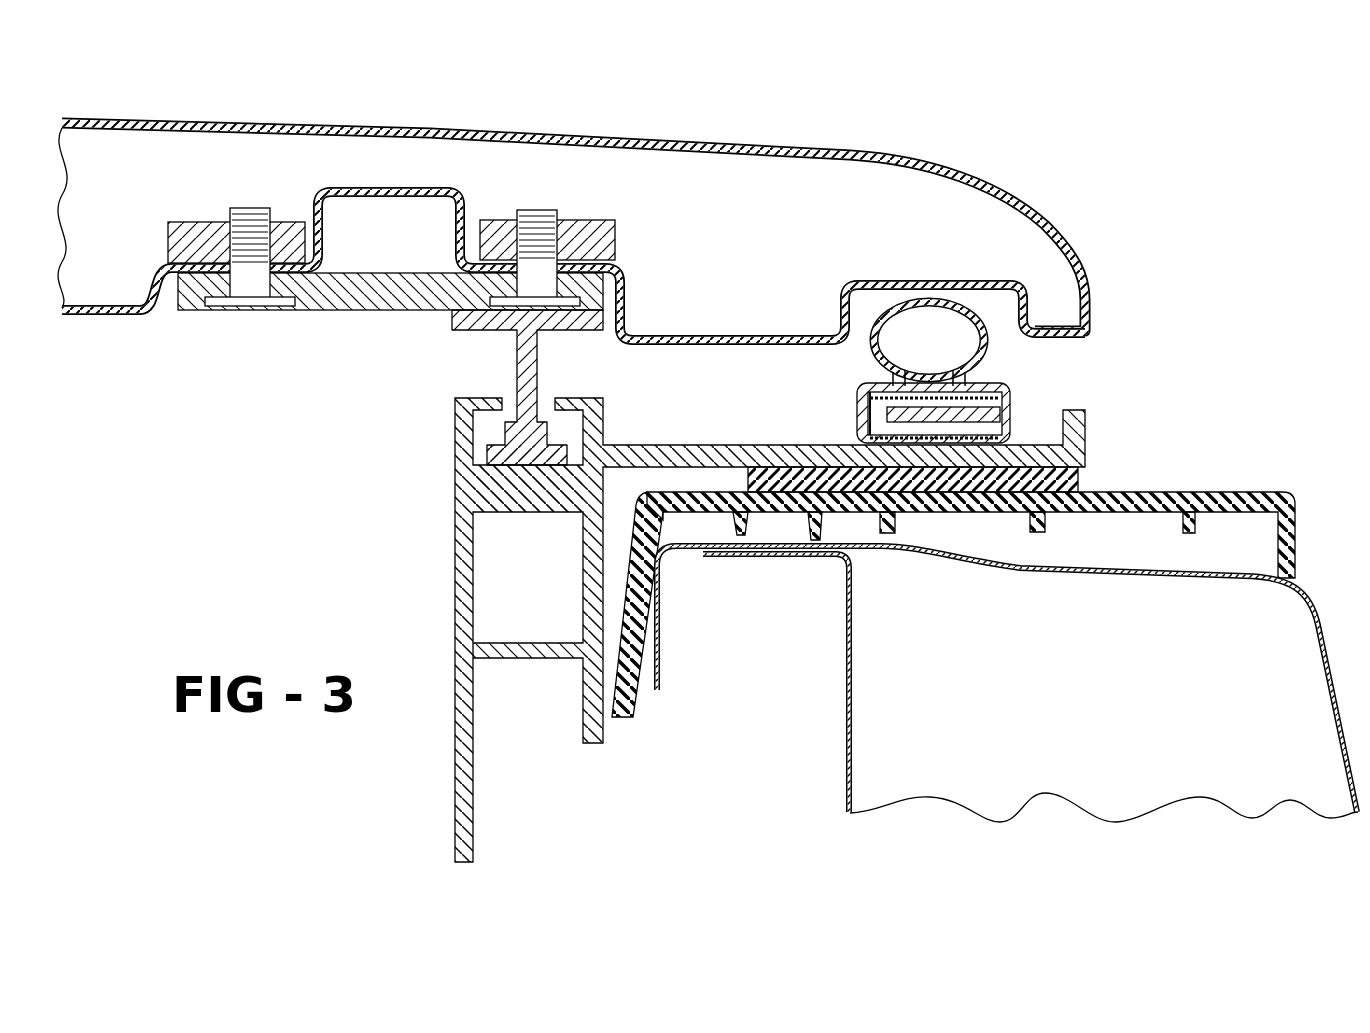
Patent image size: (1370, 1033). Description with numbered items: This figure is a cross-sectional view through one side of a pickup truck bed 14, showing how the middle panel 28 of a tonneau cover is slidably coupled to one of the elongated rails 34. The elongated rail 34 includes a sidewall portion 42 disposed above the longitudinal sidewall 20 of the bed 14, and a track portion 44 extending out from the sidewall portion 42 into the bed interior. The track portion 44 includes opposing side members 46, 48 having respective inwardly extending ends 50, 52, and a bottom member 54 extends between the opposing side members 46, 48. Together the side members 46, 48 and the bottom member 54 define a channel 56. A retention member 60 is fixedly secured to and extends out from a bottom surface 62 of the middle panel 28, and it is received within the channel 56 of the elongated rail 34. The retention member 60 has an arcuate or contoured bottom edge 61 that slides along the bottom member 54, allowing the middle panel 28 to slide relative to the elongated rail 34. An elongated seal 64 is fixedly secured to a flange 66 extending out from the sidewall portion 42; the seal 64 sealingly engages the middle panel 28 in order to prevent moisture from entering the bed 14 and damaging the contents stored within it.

The bed 14 is at (283, 354).
The middle panel 28 is at (1050, 190).
The bottom surface 62 is at (690, 340).
The retention member 60 is at (517, 360).
The bottom edge 61 is at (552, 470).
The track portion 44 is at (456, 405).
The side member 46 is at (470, 432).
The side member 48 is at (603, 430).
The inwardly extending end 50 is at (485, 396).
The inwardly extending end 52 is at (563, 398).
The bottom member 54 is at (525, 485).
The channel 56 is at (517, 474).
The sidewall portion 42 is at (808, 445).
The elongated rail 34 is at (658, 470).
The sidewall 20 is at (623, 690).
The elongated seal 64 is at (985, 340).
The flange 66 is at (1015, 440).